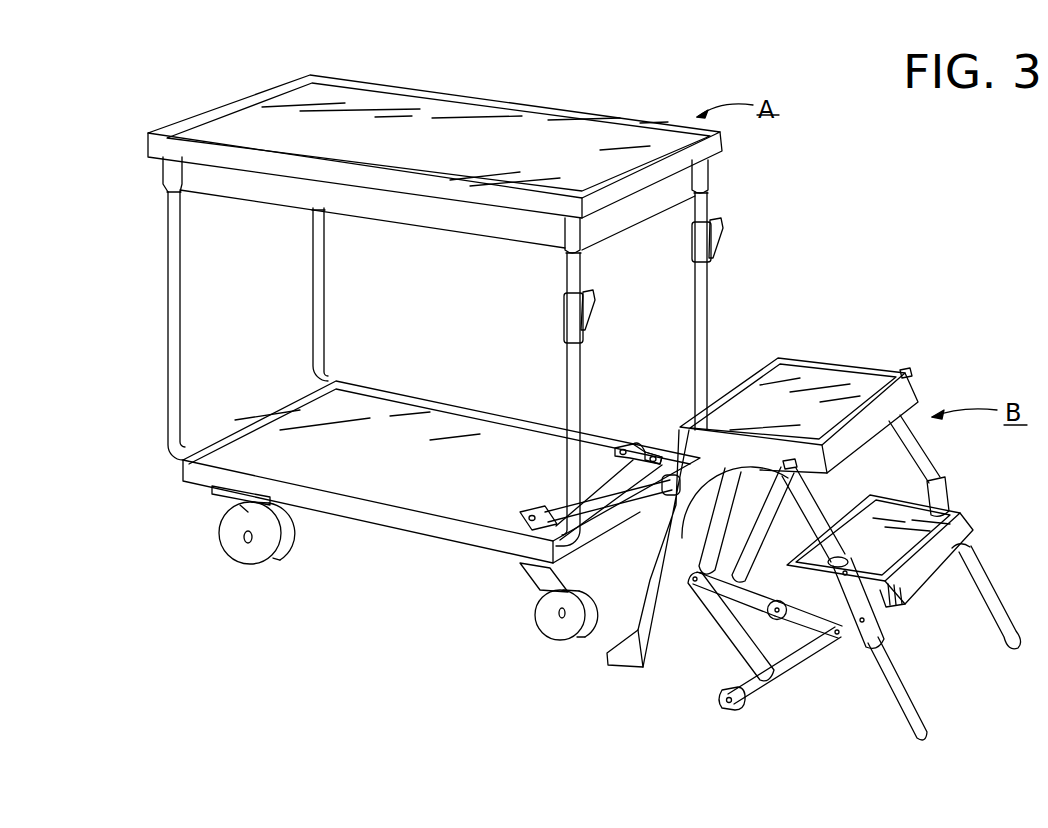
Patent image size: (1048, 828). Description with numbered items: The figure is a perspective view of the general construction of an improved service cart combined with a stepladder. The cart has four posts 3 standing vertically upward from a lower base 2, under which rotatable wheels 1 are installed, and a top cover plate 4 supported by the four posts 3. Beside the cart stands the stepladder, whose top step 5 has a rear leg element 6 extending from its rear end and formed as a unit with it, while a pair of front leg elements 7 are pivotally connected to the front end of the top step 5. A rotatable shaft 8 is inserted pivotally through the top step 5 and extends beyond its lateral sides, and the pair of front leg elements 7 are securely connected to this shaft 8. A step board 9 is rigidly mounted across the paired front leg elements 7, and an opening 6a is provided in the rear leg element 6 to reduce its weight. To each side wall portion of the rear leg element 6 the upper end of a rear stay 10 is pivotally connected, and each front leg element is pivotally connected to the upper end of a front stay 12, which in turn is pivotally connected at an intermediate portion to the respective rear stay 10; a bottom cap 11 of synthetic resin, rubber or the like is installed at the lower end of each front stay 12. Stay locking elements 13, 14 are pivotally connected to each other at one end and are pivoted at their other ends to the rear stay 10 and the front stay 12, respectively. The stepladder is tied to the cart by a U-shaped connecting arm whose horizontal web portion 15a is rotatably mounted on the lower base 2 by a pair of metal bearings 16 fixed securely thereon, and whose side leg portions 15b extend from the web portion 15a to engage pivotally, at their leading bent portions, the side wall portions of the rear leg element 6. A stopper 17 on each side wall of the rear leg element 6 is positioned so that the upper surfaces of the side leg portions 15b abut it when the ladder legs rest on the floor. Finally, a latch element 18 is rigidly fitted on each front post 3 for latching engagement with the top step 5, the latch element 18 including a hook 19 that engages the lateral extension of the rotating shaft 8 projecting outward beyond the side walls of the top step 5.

The rotatable wheels 1 is at (258, 560).
The lower base 2 is at (390, 485).
The posts 3 is at (168, 310).
The top cover plate 4 is at (535, 133).
The top step 5 is at (832, 385).
The rear leg element 6 is at (636, 628).
The opening 6a is at (718, 500).
The front leg elements 7 is at (985, 590).
The rotatable shaft 8 is at (905, 372).
The step board 9 is at (890, 565).
The rear stay 10 is at (743, 652).
The bottom cap 11 is at (720, 700).
The front stay 12 is at (792, 670).
The stay locking element 13 is at (780, 600).
The stay locking element 14 is at (803, 630).
The horizontal web portion 15a is at (603, 482).
The side leg portions 15b is at (615, 503).
The metal bearings 16 is at (632, 447).
The stopper 17 is at (662, 446).
The latch element 18 is at (565, 330).
The hook 19 is at (587, 295).